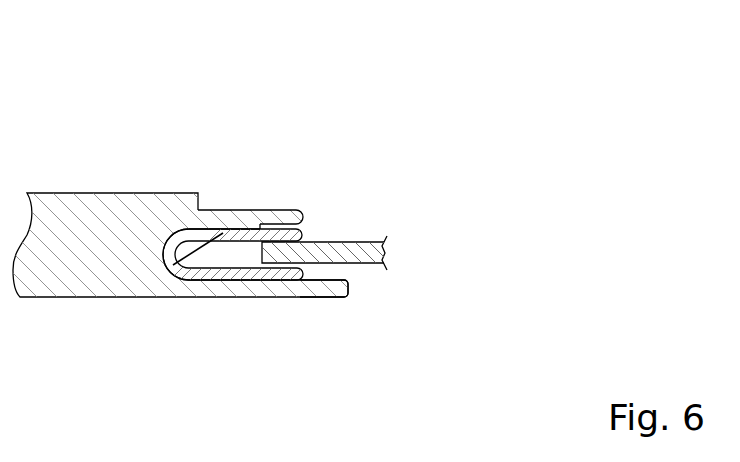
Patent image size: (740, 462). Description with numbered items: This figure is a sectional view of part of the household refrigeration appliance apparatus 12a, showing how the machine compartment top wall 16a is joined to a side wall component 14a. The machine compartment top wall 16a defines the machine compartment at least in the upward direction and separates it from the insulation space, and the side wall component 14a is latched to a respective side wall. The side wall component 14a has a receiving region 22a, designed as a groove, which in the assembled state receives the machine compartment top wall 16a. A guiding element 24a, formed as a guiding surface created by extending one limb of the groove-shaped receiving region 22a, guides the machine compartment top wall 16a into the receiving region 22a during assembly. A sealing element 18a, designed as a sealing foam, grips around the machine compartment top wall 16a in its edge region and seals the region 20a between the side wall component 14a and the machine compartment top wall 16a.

The household refrigeration appliance apparatus 12a is at (112, 132).
The side wall component 14a is at (88, 260).
The machine compartment top wall 16a is at (341, 243).
The sealing element 18a is at (223, 230).
The region 20a is at (314, 273).
The receiving region 22a is at (304, 230).
The guiding element 24a is at (350, 284).